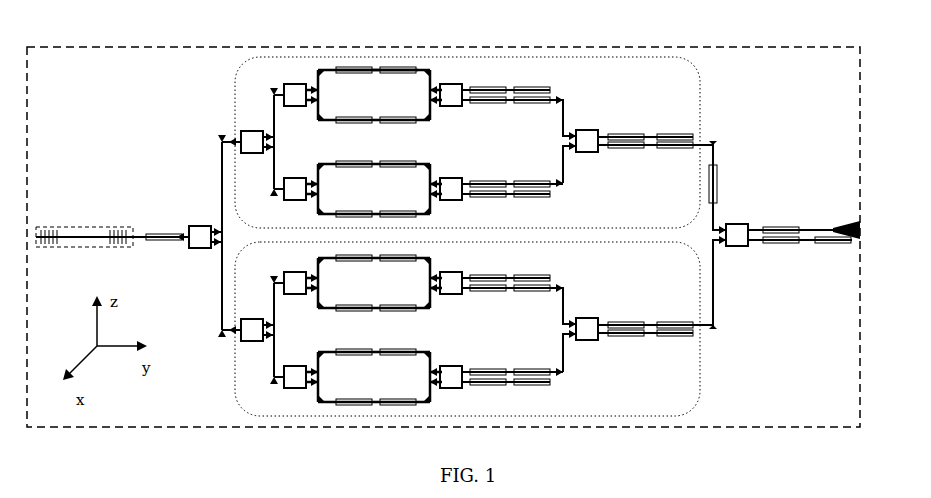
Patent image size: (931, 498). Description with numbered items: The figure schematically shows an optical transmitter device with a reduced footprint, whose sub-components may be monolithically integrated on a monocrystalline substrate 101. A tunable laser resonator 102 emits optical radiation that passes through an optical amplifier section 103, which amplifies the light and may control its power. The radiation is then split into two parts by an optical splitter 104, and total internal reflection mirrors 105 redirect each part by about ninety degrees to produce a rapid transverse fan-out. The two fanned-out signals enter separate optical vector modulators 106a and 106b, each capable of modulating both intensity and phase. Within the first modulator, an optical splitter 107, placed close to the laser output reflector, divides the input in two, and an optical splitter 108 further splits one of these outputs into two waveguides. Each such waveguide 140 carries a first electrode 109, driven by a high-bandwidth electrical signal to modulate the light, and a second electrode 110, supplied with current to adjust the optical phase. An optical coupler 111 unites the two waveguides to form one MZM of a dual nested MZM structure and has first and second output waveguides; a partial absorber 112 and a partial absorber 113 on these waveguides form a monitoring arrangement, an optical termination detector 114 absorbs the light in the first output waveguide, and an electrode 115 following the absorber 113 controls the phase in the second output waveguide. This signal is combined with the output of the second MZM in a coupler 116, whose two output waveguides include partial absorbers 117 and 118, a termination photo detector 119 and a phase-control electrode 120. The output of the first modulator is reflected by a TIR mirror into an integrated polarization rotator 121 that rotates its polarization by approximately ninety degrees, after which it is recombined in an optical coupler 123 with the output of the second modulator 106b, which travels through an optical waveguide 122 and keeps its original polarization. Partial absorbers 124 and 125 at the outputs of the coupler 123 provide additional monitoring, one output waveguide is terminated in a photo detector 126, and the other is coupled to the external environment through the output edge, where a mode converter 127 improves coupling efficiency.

The monocrystalline substrate 101 is at (67, 46).
The laser resonator 102 is at (65, 226).
The optical amplifier section 103 is at (160, 233).
The optical splitter 104 is at (197, 227).
The total internal reflection mirrors 105 is at (222, 143).
The optical vector modulator 106a is at (235, 90).
The optical vector modulator 106b is at (237, 373).
The optical splitter 107 is at (251, 131).
The optical splitter 108 is at (302, 83).
The first electrode 109 is at (350, 69).
The second electrode 110 is at (400, 69).
The optical coupler 111 is at (458, 84).
The partial absorber 112 is at (490, 88).
The partial absorber 113 is at (485, 101).
The optical termination detector 114 is at (530, 88).
The electrode 115 is at (527, 101).
The coupler 116 is at (590, 130).
The partial absorber 117 is at (630, 136).
The partial absorber 118 is at (624, 147).
The termination photo detector 119 is at (680, 136).
The electrode 120 is at (684, 147).
The polarization rotator 121 is at (718, 178).
The optical waveguide 122 is at (715, 293).
The optical coupler 123 is at (745, 223).
The partial absorber 124 is at (782, 229).
The partial absorber 125 is at (773, 243).
The photo detector 126 is at (828, 244).
The mode converter 127 is at (845, 225).
The waveguide 140 is at (364, 69).